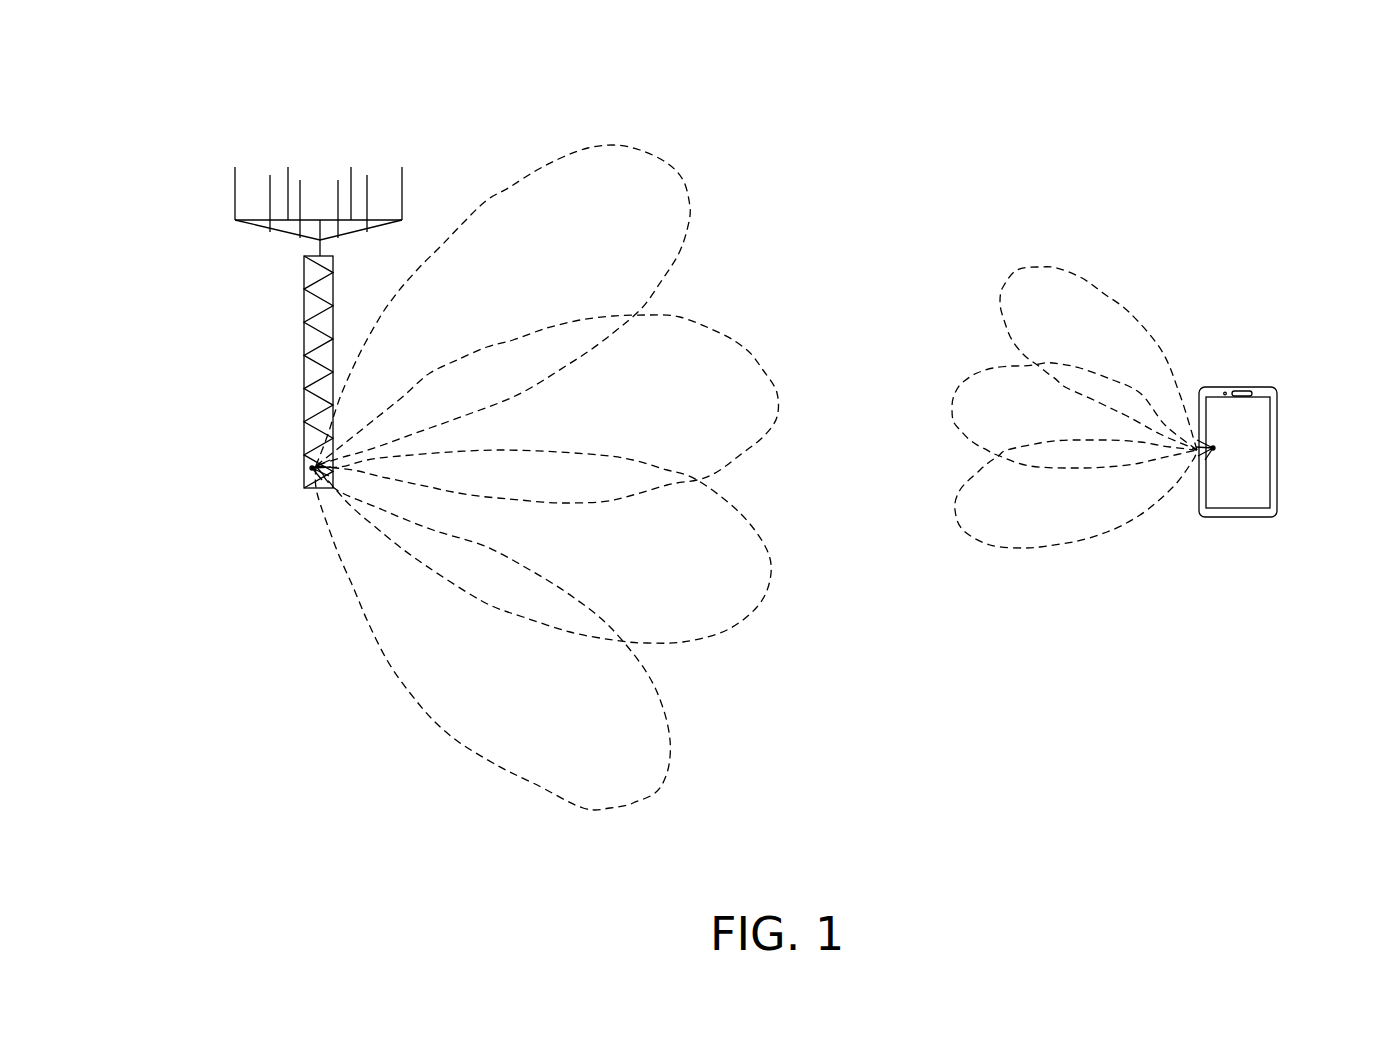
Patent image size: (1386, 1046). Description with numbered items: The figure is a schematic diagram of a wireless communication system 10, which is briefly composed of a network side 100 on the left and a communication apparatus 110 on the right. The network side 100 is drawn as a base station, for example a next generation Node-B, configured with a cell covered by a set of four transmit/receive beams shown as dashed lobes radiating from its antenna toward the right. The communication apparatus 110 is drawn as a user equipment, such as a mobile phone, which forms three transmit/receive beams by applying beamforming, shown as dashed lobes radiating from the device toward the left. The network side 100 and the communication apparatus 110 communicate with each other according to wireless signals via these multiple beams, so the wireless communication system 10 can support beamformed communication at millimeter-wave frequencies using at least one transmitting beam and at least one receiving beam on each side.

The wireless communication system 10 is at (1217, 147).
The network side 100 is at (303, 376).
The communication apparatus 110 is at (1240, 386).